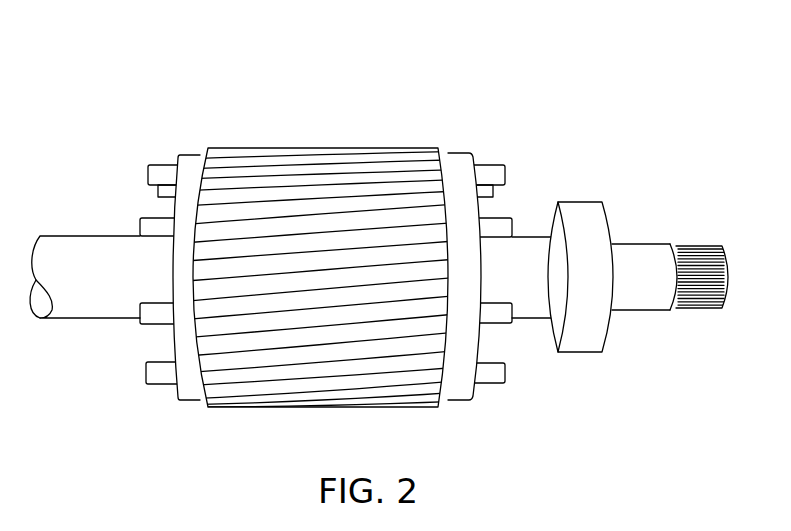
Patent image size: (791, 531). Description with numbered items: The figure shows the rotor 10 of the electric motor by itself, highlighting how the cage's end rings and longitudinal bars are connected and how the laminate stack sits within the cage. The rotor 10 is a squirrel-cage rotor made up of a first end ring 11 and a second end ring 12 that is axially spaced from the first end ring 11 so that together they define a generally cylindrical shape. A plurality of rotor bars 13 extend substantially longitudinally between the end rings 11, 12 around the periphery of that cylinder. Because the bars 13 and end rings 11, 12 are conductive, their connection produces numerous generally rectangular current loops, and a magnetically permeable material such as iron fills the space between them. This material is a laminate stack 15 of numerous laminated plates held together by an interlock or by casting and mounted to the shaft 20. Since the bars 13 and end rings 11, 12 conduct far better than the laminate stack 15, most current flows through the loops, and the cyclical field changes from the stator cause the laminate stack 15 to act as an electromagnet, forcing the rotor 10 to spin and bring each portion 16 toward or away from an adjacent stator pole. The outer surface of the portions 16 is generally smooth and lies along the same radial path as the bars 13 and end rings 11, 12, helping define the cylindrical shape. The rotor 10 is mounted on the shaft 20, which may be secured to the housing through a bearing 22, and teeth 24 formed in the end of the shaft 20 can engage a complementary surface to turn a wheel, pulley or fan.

The rotor 10 is at (421, 95).
The first end ring 11 is at (458, 158).
The second end ring 12 is at (192, 157).
The rotor bars 13 is at (352, 163).
The laminate stack 15 is at (285, 182).
The portion 16 is at (319, 261).
The shaft 20 is at (533, 308).
The bearing 22 is at (578, 208).
The teeth 24 is at (697, 248).